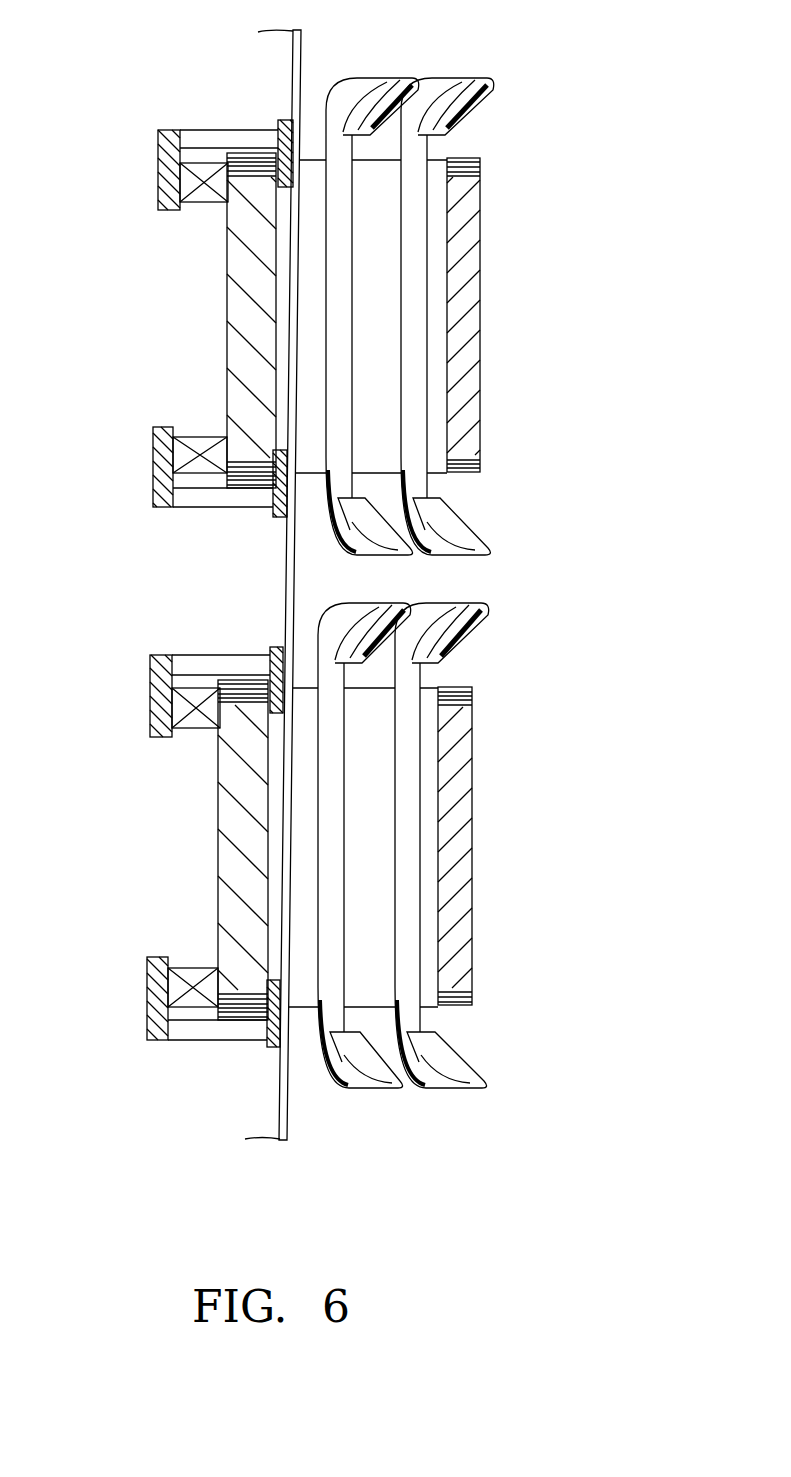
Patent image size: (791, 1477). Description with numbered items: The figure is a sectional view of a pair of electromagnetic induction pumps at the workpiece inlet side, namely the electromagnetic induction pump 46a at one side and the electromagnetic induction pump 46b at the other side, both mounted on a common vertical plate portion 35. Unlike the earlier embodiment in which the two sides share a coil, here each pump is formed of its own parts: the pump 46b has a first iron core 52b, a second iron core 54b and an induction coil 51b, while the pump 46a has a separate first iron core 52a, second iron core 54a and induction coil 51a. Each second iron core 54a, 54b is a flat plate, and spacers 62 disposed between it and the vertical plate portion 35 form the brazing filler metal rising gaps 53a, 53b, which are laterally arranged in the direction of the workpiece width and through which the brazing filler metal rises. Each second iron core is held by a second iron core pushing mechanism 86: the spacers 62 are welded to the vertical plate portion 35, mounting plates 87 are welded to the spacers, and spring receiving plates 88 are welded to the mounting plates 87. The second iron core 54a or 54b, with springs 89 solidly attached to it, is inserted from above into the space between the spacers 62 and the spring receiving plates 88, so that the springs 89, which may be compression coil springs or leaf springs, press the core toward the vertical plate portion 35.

The vertical plate portion 35 is at (302, 48).
The electromagnetic induction pump at one side 46a is at (459, 825).
The electromagnetic induction pump at the other side 46b is at (466, 296).
The induction coil 51a is at (407, 858).
The induction coil 51b is at (415, 360).
The first iron core 52a is at (457, 794).
The first iron core 52b is at (470, 273).
The brazing filler metal rising gap 53a is at (267, 857).
The brazing filler metal rising gap 53b is at (280, 290).
The second iron core 54a is at (228, 820).
The second iron core 54b is at (235, 262).
The spacer 62 is at (280, 130).
The second iron core pushing mechanism 86 is at (173, 430).
The mounting plate 87 is at (216, 136).
The spring receiving plate 88 is at (163, 183).
The spring 89 is at (205, 188).